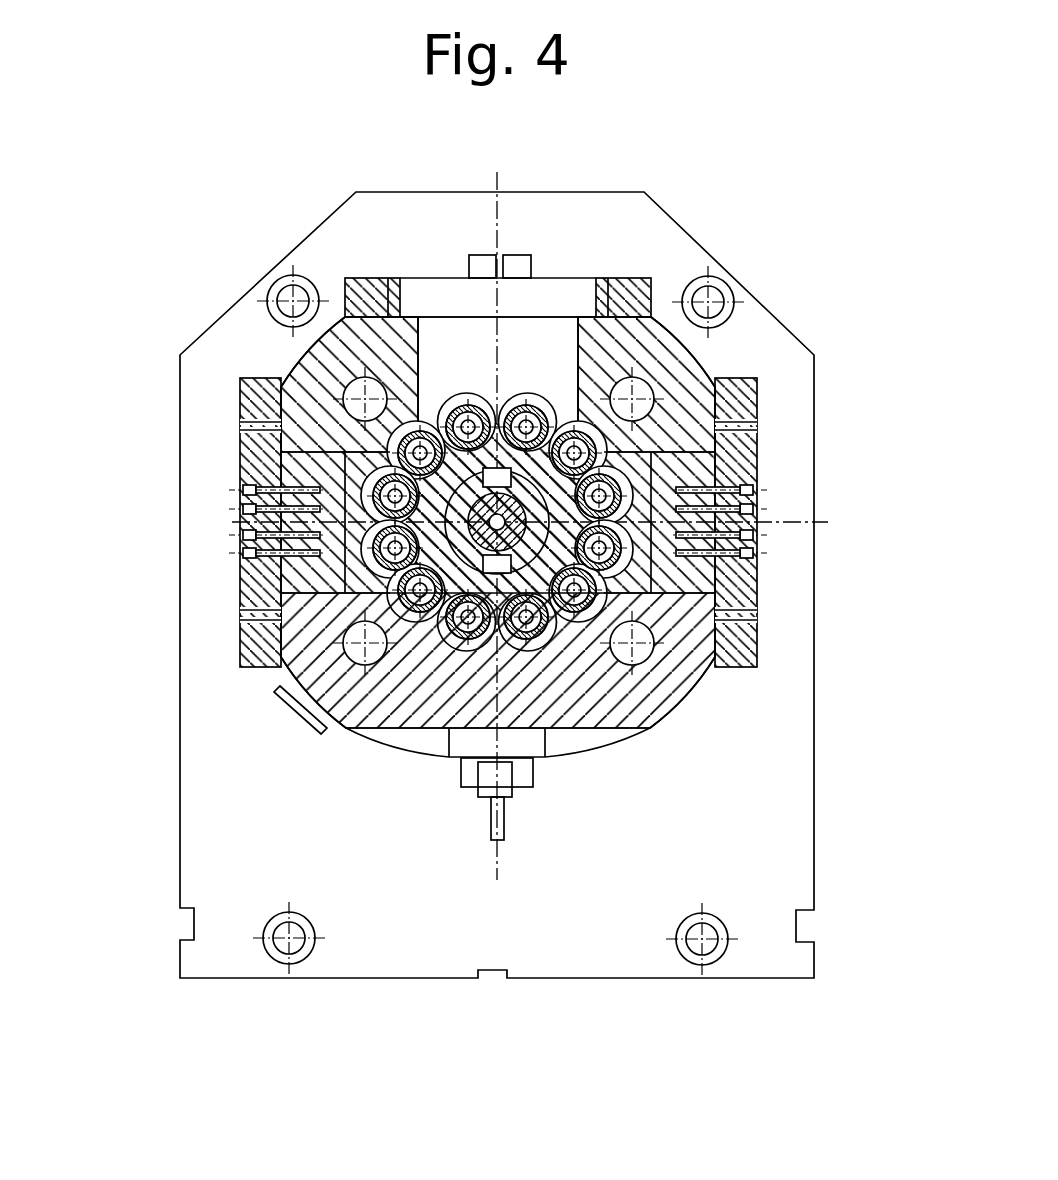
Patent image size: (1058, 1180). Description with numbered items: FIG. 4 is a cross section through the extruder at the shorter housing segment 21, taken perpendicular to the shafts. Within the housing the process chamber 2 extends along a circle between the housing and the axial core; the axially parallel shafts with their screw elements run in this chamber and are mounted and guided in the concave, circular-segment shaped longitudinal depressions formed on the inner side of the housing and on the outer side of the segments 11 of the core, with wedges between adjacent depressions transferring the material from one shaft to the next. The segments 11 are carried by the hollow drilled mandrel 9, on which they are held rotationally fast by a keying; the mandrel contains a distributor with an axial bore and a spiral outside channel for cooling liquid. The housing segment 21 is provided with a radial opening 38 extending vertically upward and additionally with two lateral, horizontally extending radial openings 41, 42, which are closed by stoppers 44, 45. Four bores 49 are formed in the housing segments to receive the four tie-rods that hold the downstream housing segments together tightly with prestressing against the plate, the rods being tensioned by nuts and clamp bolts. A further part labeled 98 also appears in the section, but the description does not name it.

The process chamber 2 is at (627, 513).
The hollow drilled mandrel 9 is at (285, 737).
The segments of the core 11 is at (668, 397).
The housing segment 21 is at (758, 695).
The radial opening 38 is at (543, 380).
The lateral radial opening 41 is at (247, 540).
The lateral radial opening 42 is at (712, 587).
The stopper 44 is at (290, 452).
The stopper 45 is at (743, 513).
The bores 49 is at (360, 383).
The support strip 98 is at (340, 732).